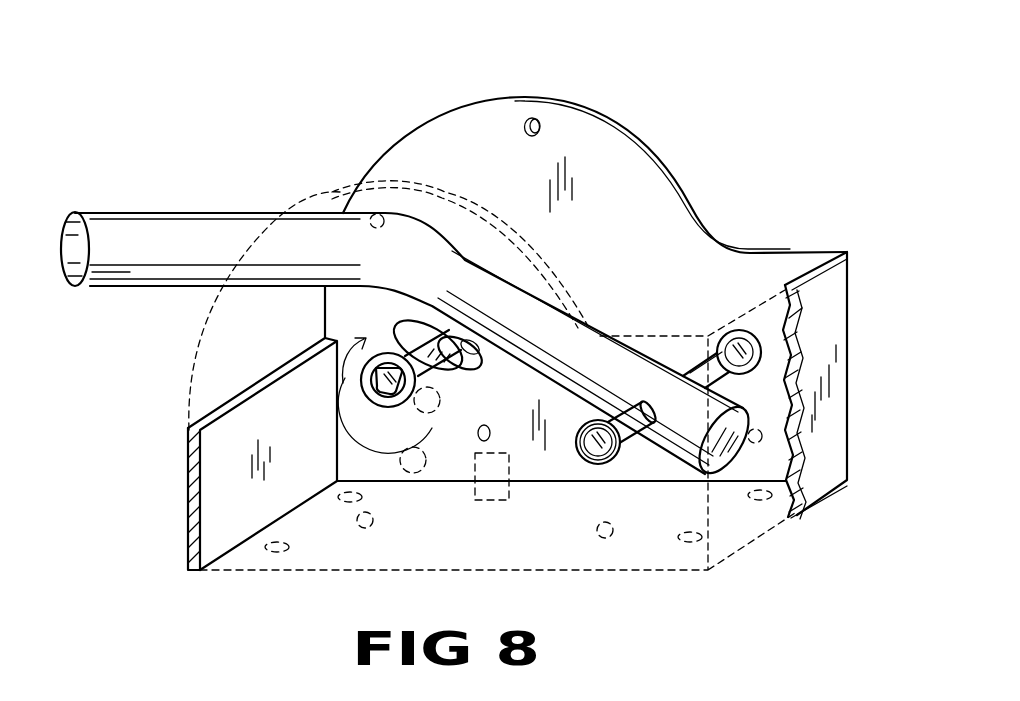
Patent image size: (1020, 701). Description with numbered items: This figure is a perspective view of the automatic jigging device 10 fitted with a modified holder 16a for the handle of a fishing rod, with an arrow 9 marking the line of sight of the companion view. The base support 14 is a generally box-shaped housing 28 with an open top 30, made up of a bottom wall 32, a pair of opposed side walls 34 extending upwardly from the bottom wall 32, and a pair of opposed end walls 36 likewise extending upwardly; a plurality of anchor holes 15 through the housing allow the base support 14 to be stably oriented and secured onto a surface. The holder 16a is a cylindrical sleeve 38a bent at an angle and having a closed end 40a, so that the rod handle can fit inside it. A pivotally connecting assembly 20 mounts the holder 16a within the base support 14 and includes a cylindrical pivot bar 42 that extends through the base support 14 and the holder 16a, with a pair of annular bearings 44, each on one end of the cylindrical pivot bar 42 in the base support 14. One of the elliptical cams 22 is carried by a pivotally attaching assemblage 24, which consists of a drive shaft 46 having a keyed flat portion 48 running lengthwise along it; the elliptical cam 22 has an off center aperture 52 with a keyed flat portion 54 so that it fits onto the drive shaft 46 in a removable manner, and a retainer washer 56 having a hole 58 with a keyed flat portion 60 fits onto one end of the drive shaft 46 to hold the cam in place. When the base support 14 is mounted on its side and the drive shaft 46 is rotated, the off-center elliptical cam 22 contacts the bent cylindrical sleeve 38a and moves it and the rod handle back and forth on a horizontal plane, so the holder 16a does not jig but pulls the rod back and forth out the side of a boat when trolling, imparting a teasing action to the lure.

The view direction arrow 9 is at (294, 140).
The automatic jigging device 10 is at (632, 80).
The base support 14 is at (851, 329).
The anchor holes 15 is at (540, 128).
The holder 16a is at (102, 211).
The pivotally connecting assembly 20 is at (597, 470).
The elliptical cams 22 is at (462, 372).
The pivotally attaching assemblage 24 is at (411, 331).
The generally box-shaped housing 28 is at (851, 400).
The open top 30 is at (500, 80).
The bottom wall 32 is at (650, 572).
The side walls 34 is at (447, 122).
The end walls 36 is at (237, 425).
The cylindrical sleeve 38a is at (130, 272).
The closed end 40a is at (728, 460).
The cylindrical pivot bar 42 is at (634, 447).
The annular bearings 44 is at (748, 332).
The drive shaft 46 is at (393, 333).
The keyed flat portion 48 is at (454, 462).
The off center aperture 52 is at (445, 328).
The keyed flat portion 54 is at (488, 355).
The retainer washer 56 is at (365, 387).
The hole 58 is at (380, 393).
The keyed flat portion 60 is at (392, 393).